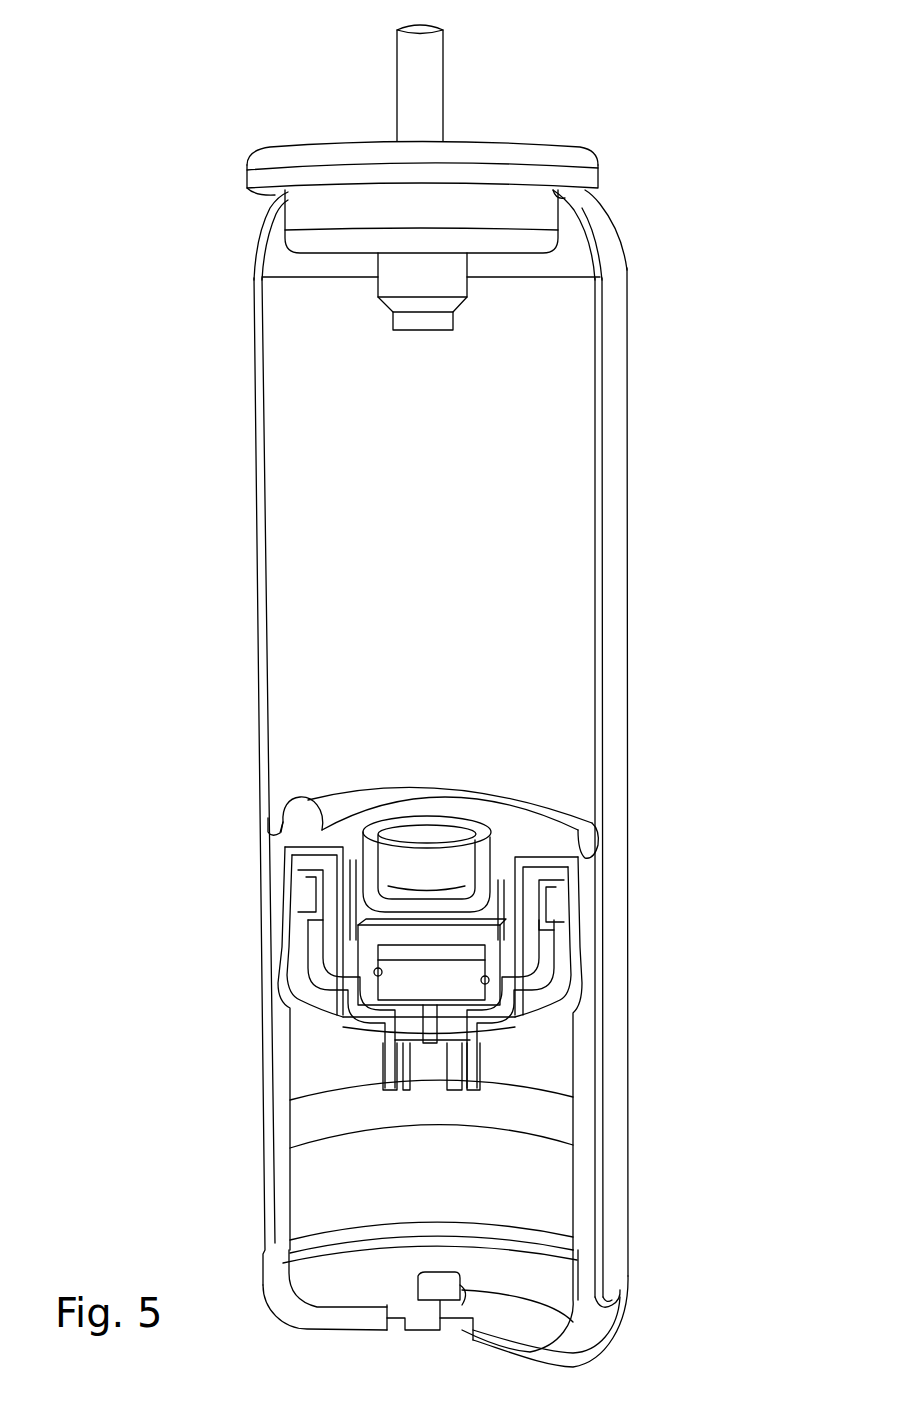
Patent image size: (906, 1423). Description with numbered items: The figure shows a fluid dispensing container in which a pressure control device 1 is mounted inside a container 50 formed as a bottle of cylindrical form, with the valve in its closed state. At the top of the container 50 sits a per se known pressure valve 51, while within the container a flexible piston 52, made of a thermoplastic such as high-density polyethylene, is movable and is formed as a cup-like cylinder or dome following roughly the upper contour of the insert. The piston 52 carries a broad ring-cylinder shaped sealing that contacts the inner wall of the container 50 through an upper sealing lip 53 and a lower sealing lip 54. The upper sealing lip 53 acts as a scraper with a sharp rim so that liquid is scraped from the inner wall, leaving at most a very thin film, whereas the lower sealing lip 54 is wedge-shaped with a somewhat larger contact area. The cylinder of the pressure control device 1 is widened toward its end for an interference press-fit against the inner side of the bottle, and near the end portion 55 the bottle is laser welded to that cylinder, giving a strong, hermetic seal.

The pressure control device 1 is at (258, 1078).
The container 50 is at (620, 577).
The pressure valve 51 is at (570, 145).
The flexible piston 52 is at (568, 789).
The upper sealing lip 53 is at (595, 857).
The lower sealing lip 54 is at (563, 987).
The end portion 55 is at (620, 1238).